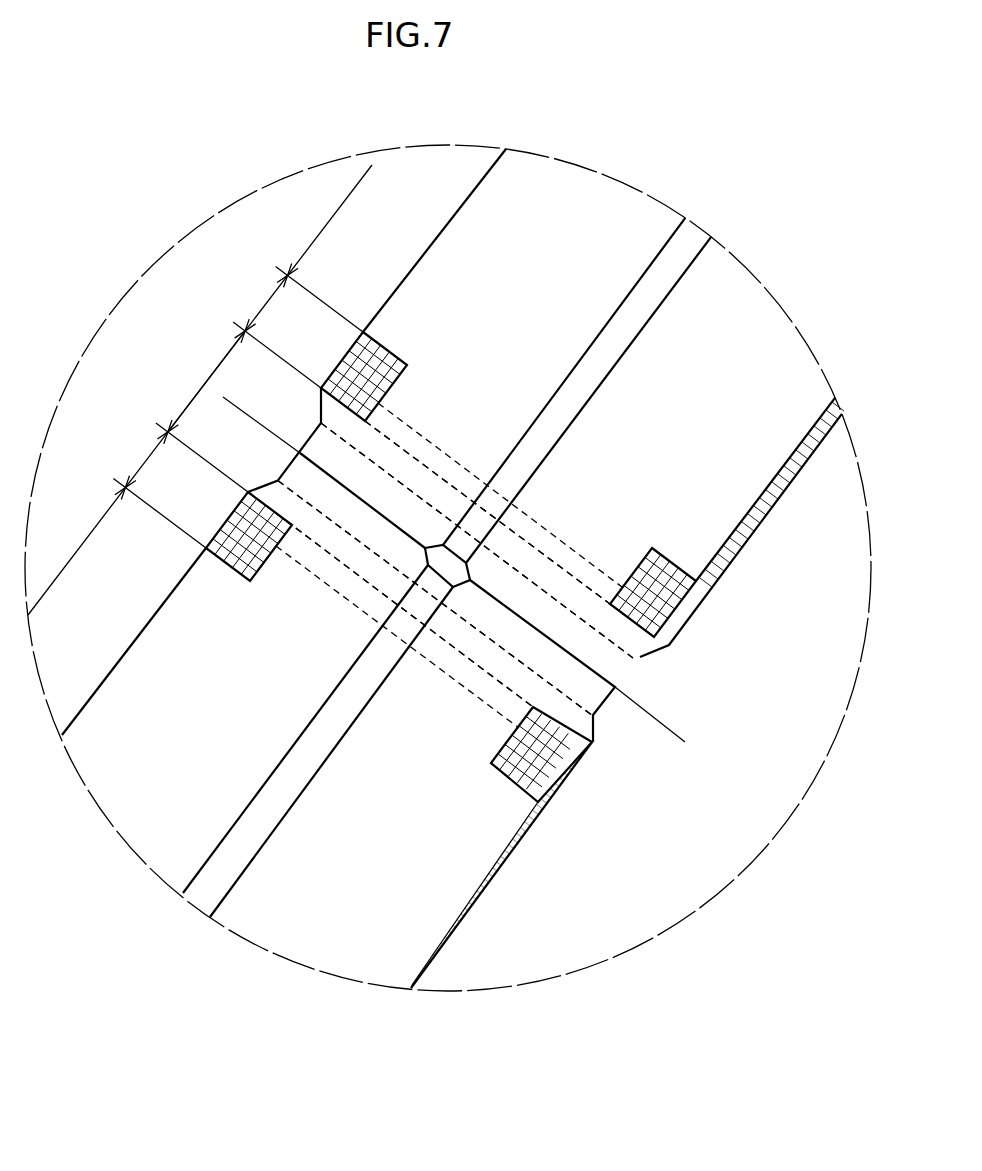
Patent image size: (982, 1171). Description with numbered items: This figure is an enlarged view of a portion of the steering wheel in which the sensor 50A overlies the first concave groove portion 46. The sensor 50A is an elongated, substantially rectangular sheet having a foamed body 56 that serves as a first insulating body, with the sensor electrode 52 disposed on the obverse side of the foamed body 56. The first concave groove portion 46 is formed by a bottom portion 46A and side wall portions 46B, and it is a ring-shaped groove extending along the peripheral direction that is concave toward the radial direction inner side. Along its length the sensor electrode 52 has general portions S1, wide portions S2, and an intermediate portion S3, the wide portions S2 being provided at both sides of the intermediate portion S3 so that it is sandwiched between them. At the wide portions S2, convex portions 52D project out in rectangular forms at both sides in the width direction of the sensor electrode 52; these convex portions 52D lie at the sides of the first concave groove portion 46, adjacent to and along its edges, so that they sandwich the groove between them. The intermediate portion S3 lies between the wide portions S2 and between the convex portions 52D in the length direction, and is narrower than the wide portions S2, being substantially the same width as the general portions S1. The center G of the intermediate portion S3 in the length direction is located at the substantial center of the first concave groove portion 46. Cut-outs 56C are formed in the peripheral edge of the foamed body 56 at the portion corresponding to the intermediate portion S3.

The foamed body 56 is at (458, 243).
The cut-outs 56C is at (427, 550).
The convex portions 52D is at (383, 358).
The sensor electrode 52 is at (762, 515).
The sensor 50A is at (520, 870).
The center of the intermediate portion G is at (666, 722).
The first concave groove portion 46 is at (624, 699).
The bottom portion 46A is at (400, 505).
The side wall portions 46B is at (392, 455).
The general portions S1 is at (200, 390).
The wide portions S2 is at (212, 382).
The intermediate portion S3 is at (204, 381).